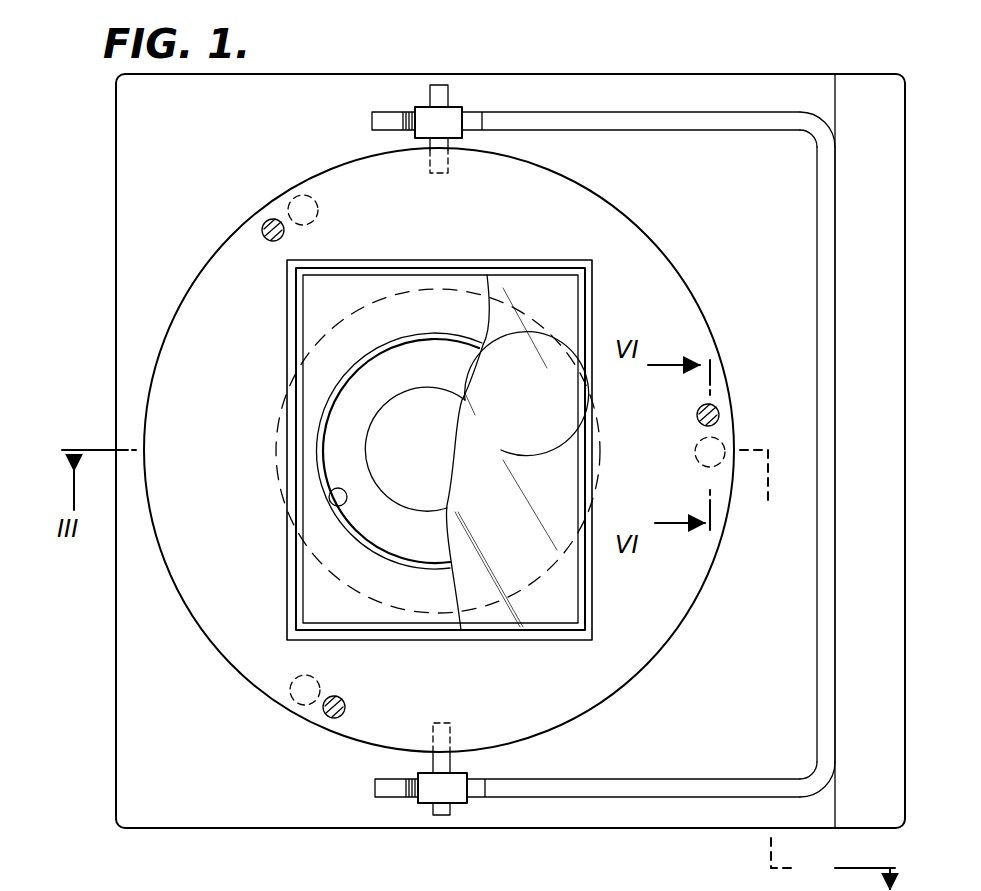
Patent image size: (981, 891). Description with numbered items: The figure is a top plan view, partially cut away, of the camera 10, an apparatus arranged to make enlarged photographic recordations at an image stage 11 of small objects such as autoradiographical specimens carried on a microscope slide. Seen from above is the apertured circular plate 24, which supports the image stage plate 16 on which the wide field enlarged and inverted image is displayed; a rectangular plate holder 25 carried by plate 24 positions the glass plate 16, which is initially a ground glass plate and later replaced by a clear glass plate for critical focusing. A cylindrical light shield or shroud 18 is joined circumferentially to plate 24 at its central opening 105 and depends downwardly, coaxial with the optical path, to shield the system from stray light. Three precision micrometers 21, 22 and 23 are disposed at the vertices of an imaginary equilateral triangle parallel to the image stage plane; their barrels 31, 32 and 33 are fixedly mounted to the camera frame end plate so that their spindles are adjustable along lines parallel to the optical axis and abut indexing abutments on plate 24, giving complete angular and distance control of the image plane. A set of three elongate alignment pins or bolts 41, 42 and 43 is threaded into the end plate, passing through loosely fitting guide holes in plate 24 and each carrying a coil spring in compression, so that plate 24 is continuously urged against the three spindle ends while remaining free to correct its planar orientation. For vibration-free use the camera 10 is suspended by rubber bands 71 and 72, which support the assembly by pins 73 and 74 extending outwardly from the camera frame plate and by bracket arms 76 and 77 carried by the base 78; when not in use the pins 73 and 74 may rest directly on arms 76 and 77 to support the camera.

The camera 10 is at (96, 298).
The image stage 11 is at (664, 226).
The plate 16 is at (565, 453).
The cylindrical light shield or shroud 18 is at (326, 466).
The precision micrometer 21 is at (295, 172).
The precision micrometer 22 is at (735, 427).
The precision micrometer 23 is at (268, 733).
The apertured circular plate 24 is at (240, 641).
The rectangular plate holder 25 is at (290, 356).
The barrel 31 is at (320, 208).
The barrel 32 is at (725, 440).
The barrel 33 is at (289, 690).
The alignment pin or bolt 41 is at (266, 224).
The alignment pin or bolt 42 is at (716, 405).
The alignment pin or bolt 43 is at (334, 720).
The rubber band 71 is at (459, 803).
The rubber band 72 is at (452, 122).
The pin 73 is at (445, 763).
The pin 74 is at (446, 94).
The bracket arm 76 is at (414, 798).
The bracket arm 77 is at (412, 117).
The base 78 is at (849, 78).
The central opening 105 is at (336, 500).